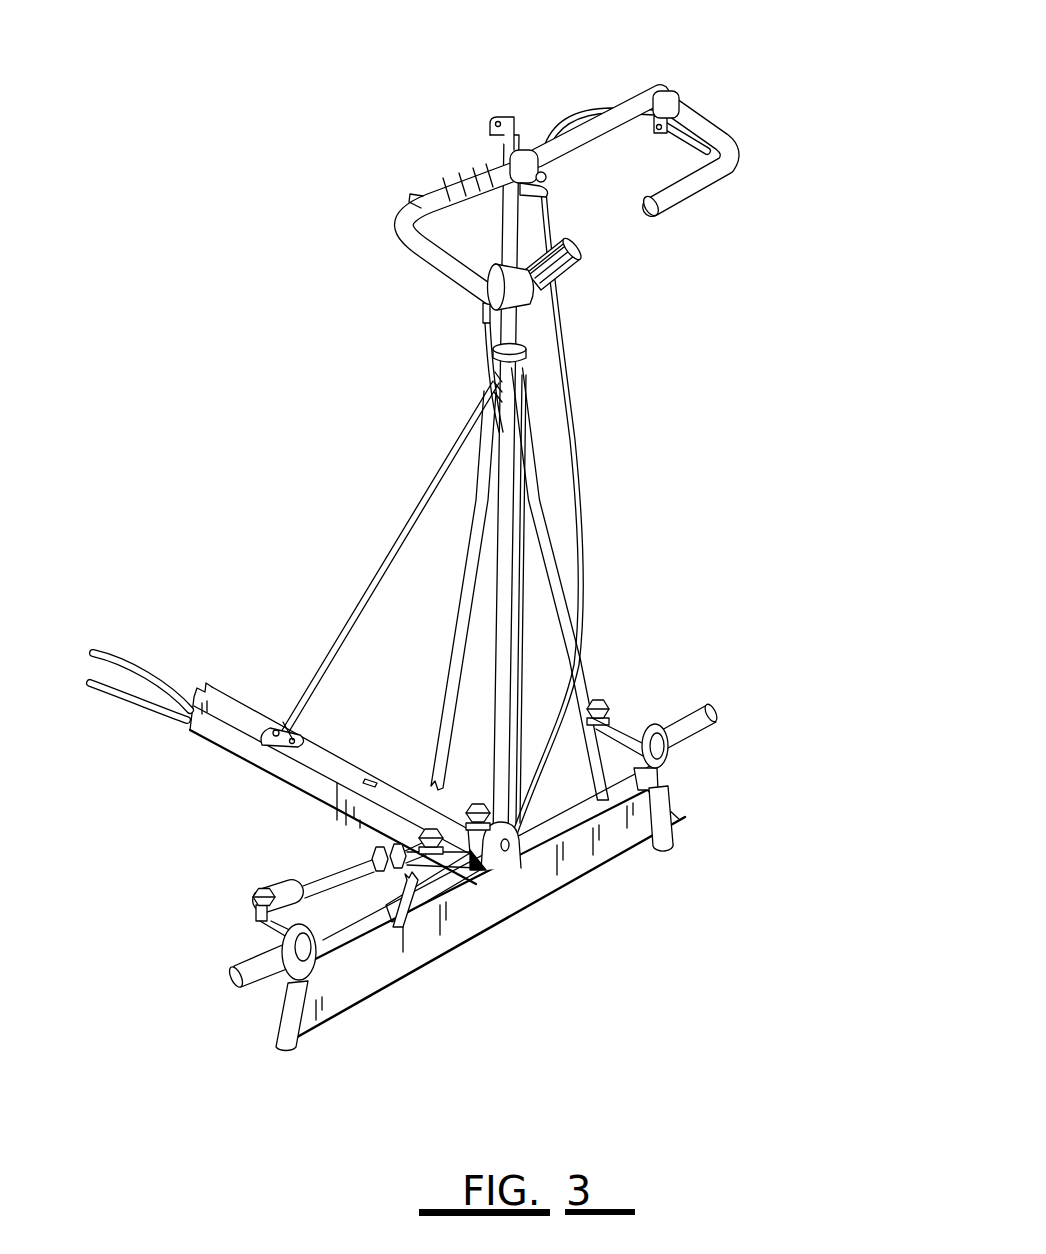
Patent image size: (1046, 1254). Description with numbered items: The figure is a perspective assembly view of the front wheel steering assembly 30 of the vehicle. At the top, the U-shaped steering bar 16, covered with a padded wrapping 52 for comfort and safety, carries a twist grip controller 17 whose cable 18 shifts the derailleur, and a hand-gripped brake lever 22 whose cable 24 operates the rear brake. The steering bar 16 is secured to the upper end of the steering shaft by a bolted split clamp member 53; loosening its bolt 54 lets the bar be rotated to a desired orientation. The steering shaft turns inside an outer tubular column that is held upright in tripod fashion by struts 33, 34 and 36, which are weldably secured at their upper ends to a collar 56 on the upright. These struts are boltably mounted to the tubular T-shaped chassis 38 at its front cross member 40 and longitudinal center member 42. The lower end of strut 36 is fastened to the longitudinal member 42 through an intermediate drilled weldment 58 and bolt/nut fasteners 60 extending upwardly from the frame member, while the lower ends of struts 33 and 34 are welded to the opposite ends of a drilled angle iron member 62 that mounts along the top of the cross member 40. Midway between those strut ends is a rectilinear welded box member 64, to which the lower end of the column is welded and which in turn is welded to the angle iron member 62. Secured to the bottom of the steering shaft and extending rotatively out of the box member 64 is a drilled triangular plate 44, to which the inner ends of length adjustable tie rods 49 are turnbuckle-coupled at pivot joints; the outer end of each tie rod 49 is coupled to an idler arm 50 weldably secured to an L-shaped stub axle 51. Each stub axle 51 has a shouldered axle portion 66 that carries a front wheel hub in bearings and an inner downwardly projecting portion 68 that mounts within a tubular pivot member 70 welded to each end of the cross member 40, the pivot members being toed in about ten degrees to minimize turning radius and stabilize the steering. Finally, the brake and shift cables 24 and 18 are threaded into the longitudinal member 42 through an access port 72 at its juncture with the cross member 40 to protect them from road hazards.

The steering bar 16 is at (648, 92).
The twist grip controller 17 is at (553, 268).
The cable 18 is at (488, 360).
The brake lever 22 is at (672, 132).
The cable 24 is at (575, 420).
The housing assembly 30 is at (414, 452).
The strut 33 is at (557, 545).
The strut 34 is at (455, 633).
The strut 36 is at (338, 630).
The chassis 38 is at (373, 779).
The cross member 40 is at (470, 928).
The longitudinal center member 42 is at (290, 790).
The triangular plate 44 is at (450, 833).
The tie rod 49 is at (530, 745).
The idler arm 50 is at (623, 722).
The stub axle 51 is at (719, 705).
The padded wrapping 52 is at (452, 188).
The split clamp member 53 is at (523, 150).
The bolt 54 is at (548, 178).
The collar 56 is at (526, 350).
The drilled weldment 58 is at (283, 722).
The bolt/nut fasteners 60 is at (268, 740).
The angle iron member 62 is at (392, 921).
The box member 64 is at (408, 899).
The shouldered axle portion 66 is at (698, 724).
The downwardly projecting portion 68 is at (647, 763).
The tubular pivot member 70 is at (665, 842).
The access port 72 is at (505, 852).